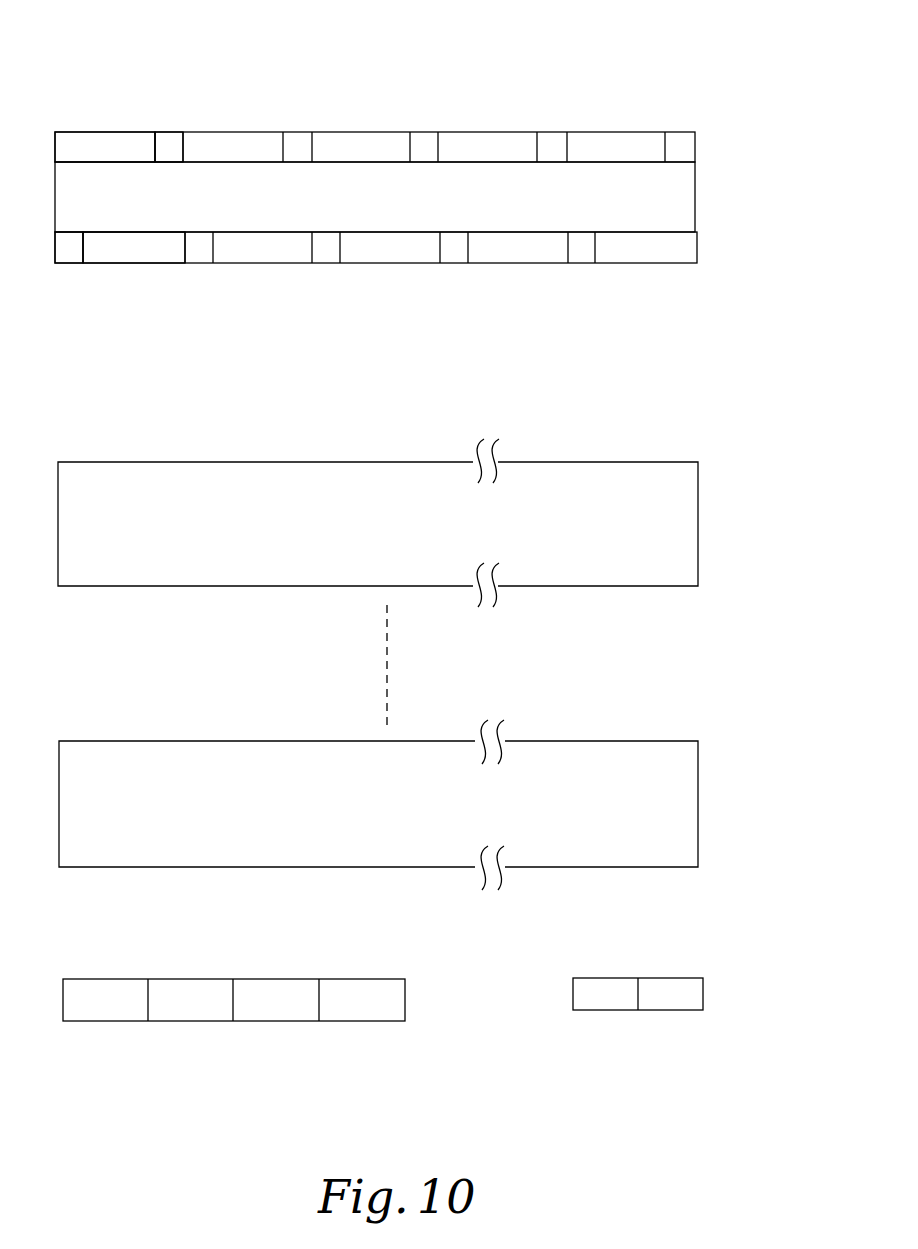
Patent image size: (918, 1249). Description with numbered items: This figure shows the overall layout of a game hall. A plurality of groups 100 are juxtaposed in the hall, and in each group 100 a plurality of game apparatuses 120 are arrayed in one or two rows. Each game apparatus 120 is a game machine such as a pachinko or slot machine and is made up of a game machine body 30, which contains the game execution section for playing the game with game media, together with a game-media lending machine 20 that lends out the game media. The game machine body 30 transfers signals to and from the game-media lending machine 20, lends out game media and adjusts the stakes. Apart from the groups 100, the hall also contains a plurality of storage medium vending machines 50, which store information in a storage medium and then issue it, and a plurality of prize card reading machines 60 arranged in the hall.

The group 100 is at (695, 210).
The game apparatus 120 is at (240, 70).
The game machine body 30 is at (97, 132).
The game-media lending machine 20 is at (173, 132).
The storage medium vending machine 50 is at (130, 1021).
The prize card reading machine 60 is at (619, 1010).